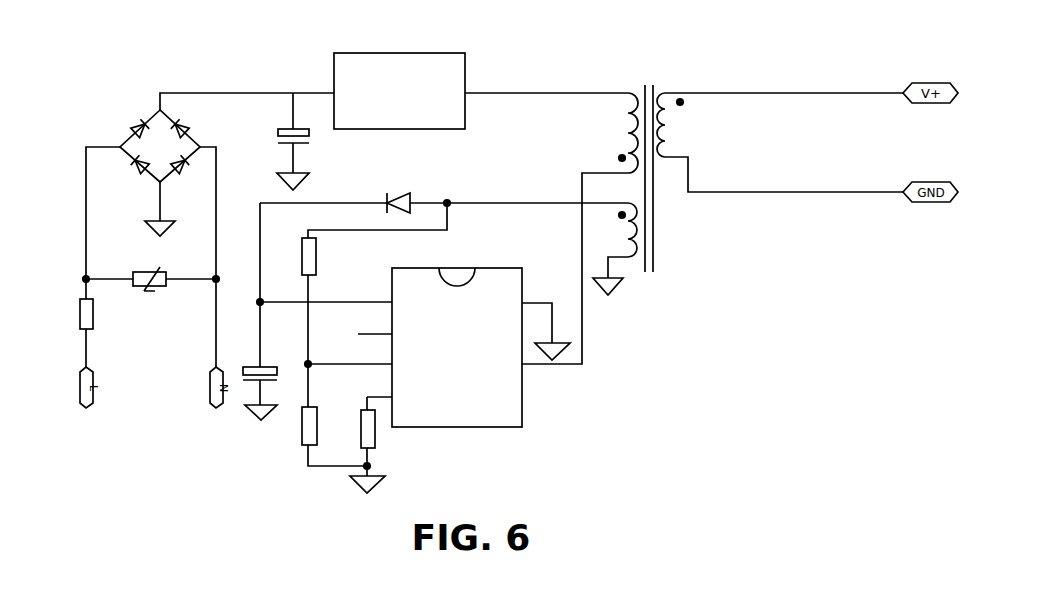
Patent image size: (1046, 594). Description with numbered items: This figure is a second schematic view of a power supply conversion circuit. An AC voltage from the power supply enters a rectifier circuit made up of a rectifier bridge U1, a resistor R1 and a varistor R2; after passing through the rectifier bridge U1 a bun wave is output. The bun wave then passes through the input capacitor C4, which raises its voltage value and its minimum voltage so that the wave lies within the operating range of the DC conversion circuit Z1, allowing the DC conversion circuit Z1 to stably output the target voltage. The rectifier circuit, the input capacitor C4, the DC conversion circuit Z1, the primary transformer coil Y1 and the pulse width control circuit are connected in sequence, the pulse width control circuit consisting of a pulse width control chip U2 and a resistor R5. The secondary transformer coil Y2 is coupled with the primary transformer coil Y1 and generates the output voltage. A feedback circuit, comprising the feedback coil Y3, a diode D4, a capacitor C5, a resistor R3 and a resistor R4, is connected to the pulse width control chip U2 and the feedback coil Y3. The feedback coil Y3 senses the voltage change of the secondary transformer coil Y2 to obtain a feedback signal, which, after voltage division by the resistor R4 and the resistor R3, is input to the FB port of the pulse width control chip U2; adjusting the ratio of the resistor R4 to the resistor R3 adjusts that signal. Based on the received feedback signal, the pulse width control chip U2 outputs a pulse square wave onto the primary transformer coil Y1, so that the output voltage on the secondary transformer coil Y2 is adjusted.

The rectifier bridge U1 is at (145, 142).
The resistor R1 is at (69, 314).
The varistor R2 is at (151, 270).
The input capacitor C4 is at (279, 141).
The DC conversion circuit Z1 is at (399, 82).
The diode D4 is at (418, 192).
The resistor R3 is at (327, 322).
The capacitor C5 is at (268, 381).
The resistor R4 is at (321, 436).
The resistor R5 is at (377, 445).
The pulse width control chip U2 is at (510, 313).
The primary transformer coil Y1 is at (614, 133).
The secondary transformer coil Y2 is at (780, 142).
The feedback coil Y3 is at (613, 249).